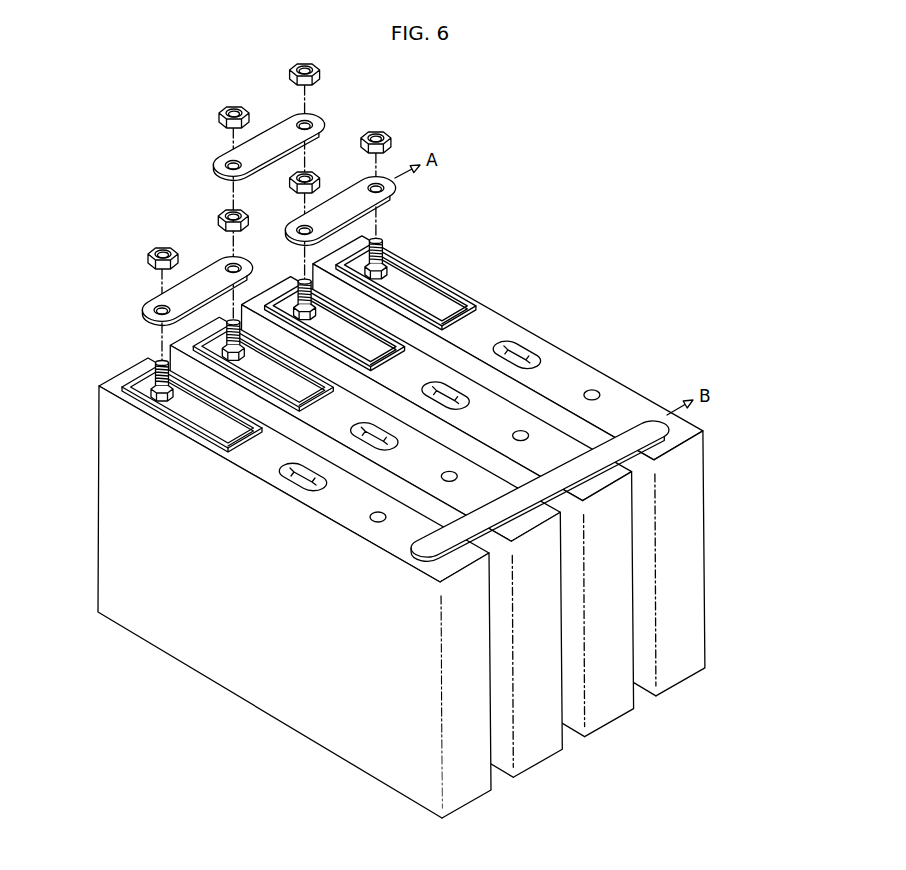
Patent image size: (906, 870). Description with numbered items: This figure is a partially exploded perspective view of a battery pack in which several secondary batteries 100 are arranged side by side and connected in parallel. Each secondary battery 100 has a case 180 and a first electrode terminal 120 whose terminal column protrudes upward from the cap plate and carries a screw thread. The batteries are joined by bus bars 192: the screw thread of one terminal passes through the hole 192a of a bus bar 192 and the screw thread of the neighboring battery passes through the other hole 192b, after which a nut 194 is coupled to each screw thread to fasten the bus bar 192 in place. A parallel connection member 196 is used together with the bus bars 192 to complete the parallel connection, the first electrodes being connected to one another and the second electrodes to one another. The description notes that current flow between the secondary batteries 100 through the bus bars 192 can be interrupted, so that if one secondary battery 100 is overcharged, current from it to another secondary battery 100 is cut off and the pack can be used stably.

The secondary battery 100 is at (442, 534).
The first electrode terminal 120 is at (143, 400).
The case 180 is at (323, 745).
The bus bar 192 is at (241, 220).
The hole of bus bar 192a is at (151, 306).
The hole of bus bar 192b is at (237, 263).
The nut 194 is at (150, 252).
The parallel connection member 196 is at (647, 412).